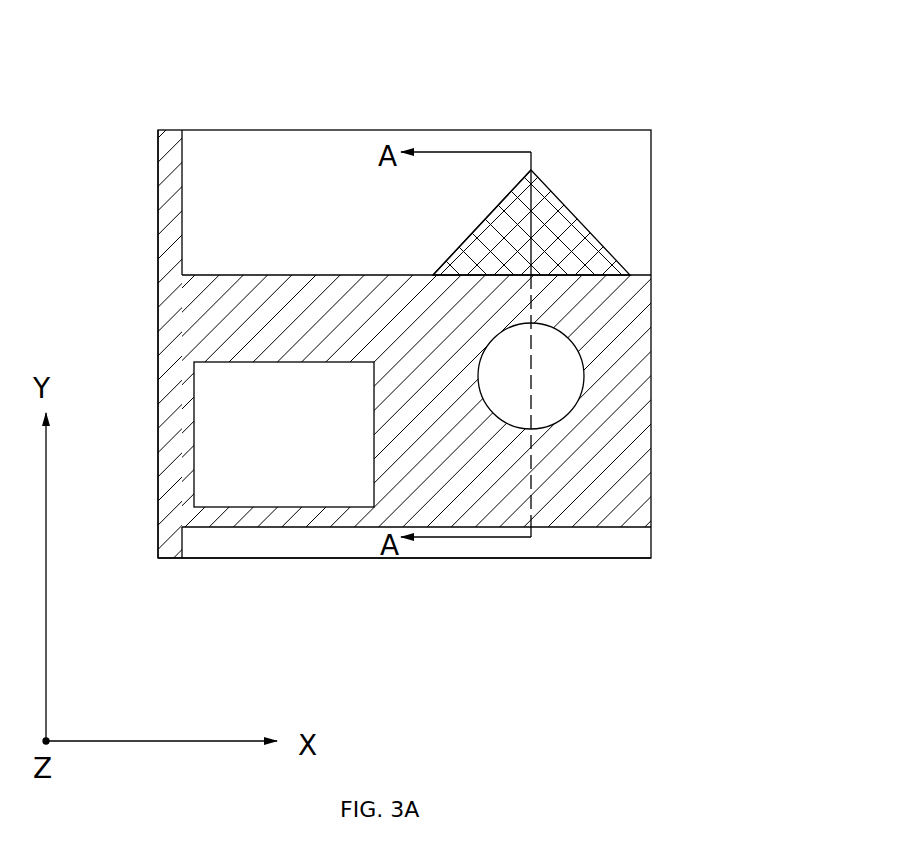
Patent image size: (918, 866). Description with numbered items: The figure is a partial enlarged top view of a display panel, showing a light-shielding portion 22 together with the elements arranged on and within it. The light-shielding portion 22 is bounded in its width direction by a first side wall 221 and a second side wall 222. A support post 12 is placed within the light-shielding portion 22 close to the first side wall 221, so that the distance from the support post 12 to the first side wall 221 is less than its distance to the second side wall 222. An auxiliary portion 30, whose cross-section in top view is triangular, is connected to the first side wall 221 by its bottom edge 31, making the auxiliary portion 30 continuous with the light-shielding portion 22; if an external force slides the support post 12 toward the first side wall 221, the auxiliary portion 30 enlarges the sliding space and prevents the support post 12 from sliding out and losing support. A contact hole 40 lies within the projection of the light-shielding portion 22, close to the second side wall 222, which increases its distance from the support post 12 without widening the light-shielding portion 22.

The support post 12 is at (559, 380).
The light-shielding portion 22 is at (612, 418).
The first side wall 221 is at (183, 274).
The second side wall 222 is at (182, 527).
The auxiliary portion 30 is at (567, 249).
The bottom edge 31 is at (480, 274).
The contact hole 40 is at (243, 384).